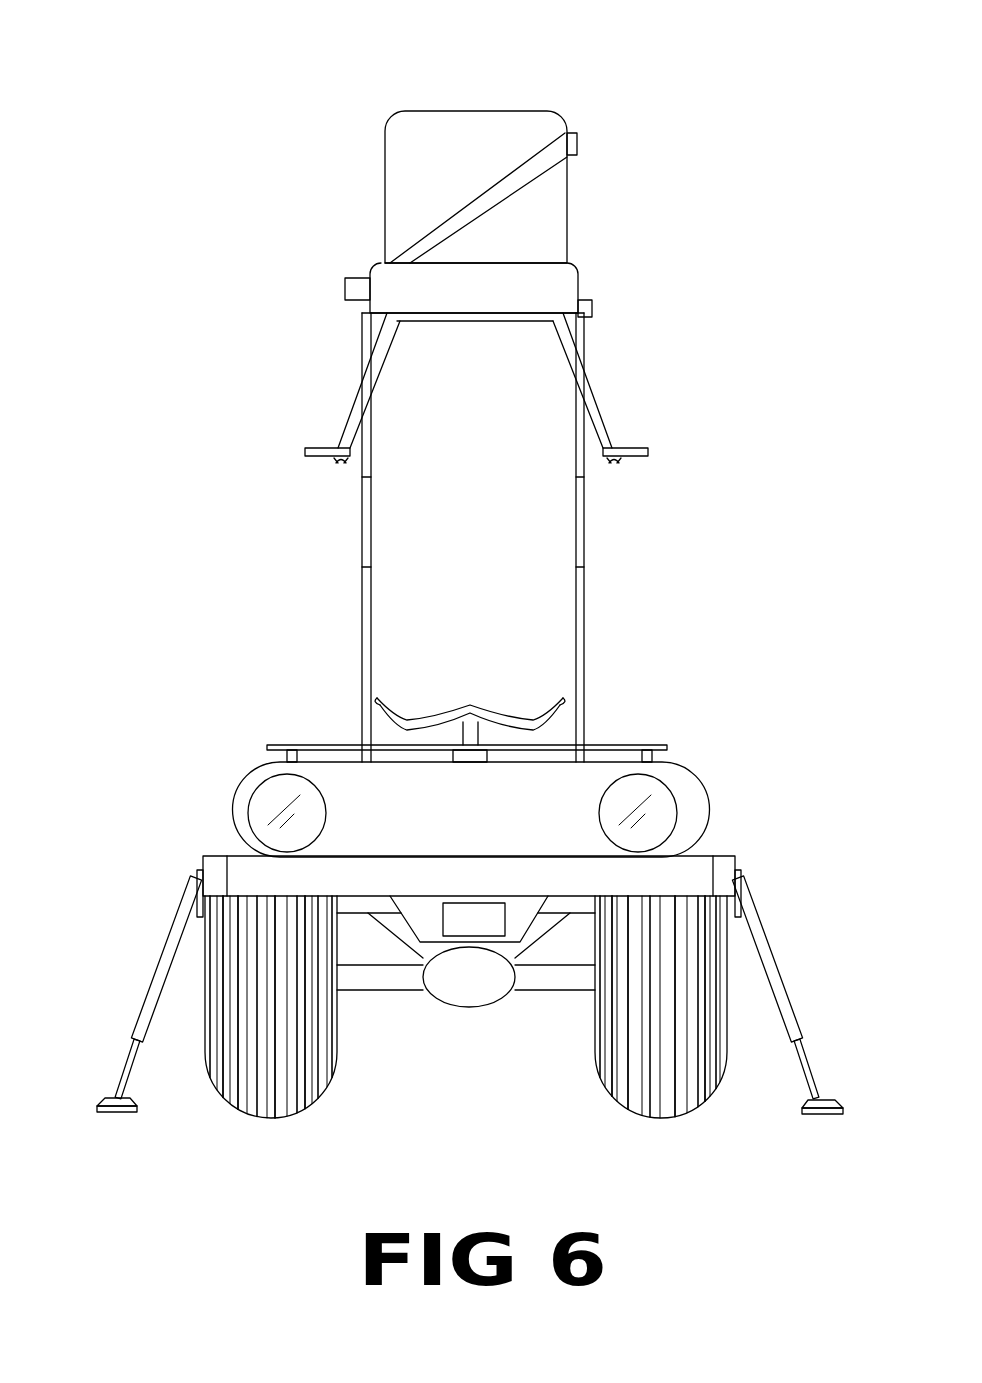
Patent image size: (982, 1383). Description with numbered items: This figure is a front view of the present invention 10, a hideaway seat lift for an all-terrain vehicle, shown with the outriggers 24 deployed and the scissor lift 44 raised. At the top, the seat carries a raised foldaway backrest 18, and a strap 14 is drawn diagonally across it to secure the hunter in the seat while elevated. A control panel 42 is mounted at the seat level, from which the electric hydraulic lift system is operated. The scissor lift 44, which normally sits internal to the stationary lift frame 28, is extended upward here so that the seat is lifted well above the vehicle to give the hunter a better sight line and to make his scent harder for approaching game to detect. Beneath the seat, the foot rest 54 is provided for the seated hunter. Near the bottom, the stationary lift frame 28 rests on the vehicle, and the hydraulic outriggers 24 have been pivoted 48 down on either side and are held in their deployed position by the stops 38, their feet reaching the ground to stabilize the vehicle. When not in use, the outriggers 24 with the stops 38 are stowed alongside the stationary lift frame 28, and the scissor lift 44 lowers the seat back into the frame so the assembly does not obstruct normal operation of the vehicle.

The present invention 10 is at (700, 268).
The strap 14 is at (503, 195).
The backrest 18 is at (407, 110).
The outriggers 24 is at (172, 972).
The stationary lift frame 28 is at (215, 855).
The stops 38 is at (198, 865).
The control panel 42 is at (357, 278).
The scissor lift 44 is at (362, 505).
The pivot 48 is at (193, 880).
The foot rest 54 is at (318, 447).